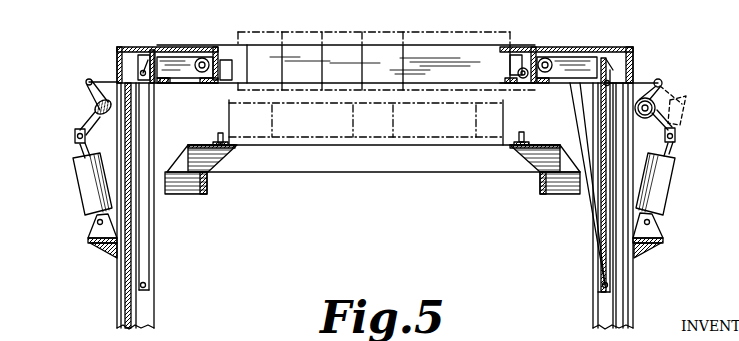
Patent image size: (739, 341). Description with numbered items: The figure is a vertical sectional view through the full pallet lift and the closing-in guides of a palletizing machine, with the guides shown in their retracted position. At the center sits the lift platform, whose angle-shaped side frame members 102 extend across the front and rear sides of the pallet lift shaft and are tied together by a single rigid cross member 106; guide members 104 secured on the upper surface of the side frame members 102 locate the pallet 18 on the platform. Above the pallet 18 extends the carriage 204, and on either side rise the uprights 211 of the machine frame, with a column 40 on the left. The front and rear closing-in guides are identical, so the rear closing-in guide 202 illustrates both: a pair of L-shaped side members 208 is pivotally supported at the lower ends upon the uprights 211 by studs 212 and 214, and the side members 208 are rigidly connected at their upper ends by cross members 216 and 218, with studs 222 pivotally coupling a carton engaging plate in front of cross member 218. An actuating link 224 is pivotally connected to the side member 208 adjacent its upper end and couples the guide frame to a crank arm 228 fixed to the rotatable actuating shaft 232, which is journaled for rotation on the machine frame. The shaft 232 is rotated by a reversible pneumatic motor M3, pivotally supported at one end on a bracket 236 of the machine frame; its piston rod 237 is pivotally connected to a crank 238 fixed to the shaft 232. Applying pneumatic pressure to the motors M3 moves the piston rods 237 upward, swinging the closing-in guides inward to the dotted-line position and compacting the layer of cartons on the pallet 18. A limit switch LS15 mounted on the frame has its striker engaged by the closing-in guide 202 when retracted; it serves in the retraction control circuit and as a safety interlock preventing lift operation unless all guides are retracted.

The pallet 18 is at (318, 124).
The column 40 is at (157, 221).
The side frame members 102 is at (230, 152).
The guide members 104 is at (221, 138).
The cross member 106 is at (396, 173).
The rear closing-in guide 202 is at (231, 24).
The carriage 204 is at (352, 20).
The side member 208 is at (148, 117).
The uprights 211 is at (154, 308).
The stud 212 is at (609, 285).
The stud 214 is at (146, 286).
The cross member 216 is at (163, 78).
The cross member 218 is at (199, 59).
The studs 222 is at (216, 67).
The actuating link 224 is at (650, 81).
The crank arm 228 is at (655, 104).
The actuating shaft 232 is at (688, 97).
The bracket 236 is at (92, 244).
The piston rod 237 is at (74, 148).
The crank 238 is at (90, 113).
The reversible pneumatic motor M3 is at (88, 172).
The limit switch LS15 is at (137, 58).